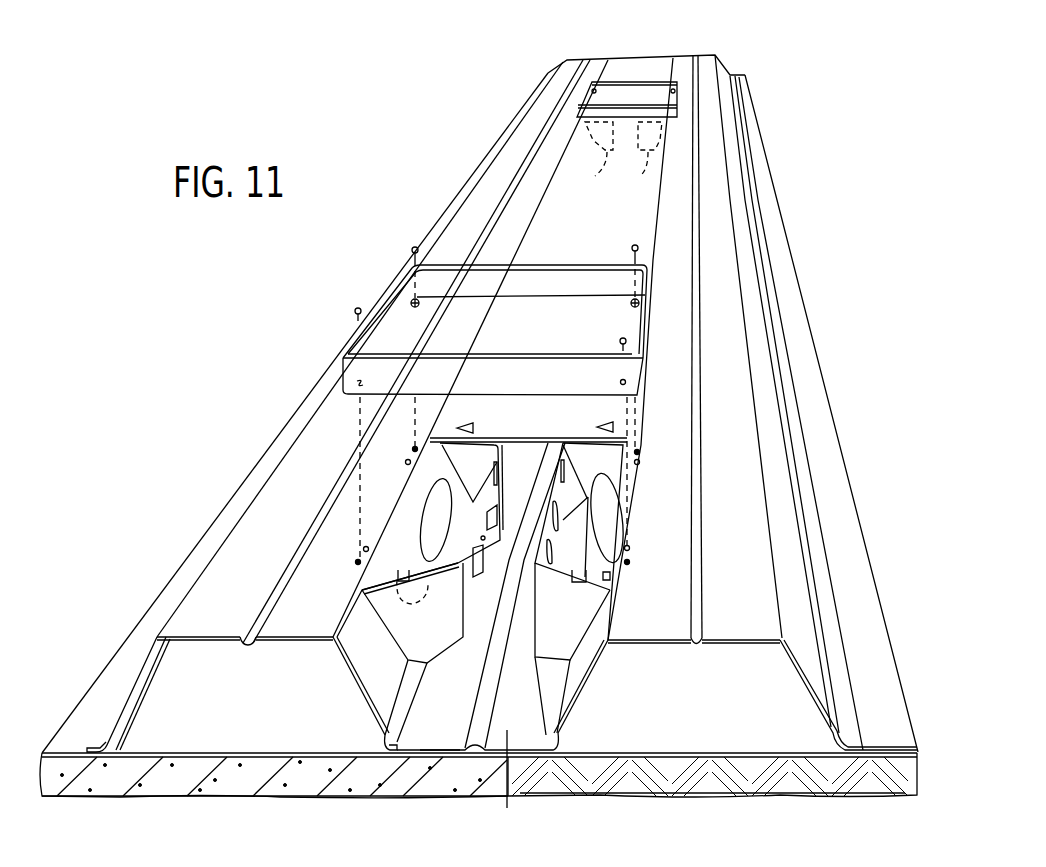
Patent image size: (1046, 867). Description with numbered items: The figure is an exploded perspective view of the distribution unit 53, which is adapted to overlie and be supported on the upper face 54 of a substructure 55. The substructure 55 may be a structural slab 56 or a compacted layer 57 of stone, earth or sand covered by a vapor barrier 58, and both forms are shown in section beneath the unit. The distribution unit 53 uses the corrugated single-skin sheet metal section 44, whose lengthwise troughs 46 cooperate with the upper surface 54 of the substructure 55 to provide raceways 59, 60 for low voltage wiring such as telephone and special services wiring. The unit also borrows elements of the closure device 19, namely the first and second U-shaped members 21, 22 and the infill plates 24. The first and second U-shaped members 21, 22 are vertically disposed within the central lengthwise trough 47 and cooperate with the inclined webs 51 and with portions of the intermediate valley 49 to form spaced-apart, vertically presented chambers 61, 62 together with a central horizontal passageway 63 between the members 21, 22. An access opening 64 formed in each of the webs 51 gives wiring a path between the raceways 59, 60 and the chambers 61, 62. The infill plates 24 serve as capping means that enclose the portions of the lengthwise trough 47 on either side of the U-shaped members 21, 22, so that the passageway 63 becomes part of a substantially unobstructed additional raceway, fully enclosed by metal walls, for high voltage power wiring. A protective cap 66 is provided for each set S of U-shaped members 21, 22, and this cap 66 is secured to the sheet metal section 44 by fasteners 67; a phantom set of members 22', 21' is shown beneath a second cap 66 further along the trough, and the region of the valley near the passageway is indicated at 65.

The closure device 19 is at (668, 40).
The infill plates 24 is at (623, 70).
The corrugated single-skin sheet metal section 44 is at (766, 390).
The distribution unit 53 is at (280, 424).
The lengthwise troughs 46 is at (220, 650).
The upper face 54 is at (96, 715).
The vapor barrier 58 is at (885, 752).
The inclined webs 51 is at (353, 677).
The lengthwise trough 47 is at (420, 698).
The intermediate valley 49 is at (422, 737).
The central horizontal passageway 63 is at (512, 658).
The raceway 59 is at (280, 722).
The structural slab 56 is at (320, 777).
The raceway 60 is at (650, 720).
The compacted layer 57 is at (733, 777).
The substructure 55 is at (128, 806).
The trough bottom 65 is at (448, 715).
The protective cap 66 is at (605, 99).
The fasteners 67 is at (412, 254).
The chamber 62 is at (439, 465).
The second U-shaped member 22 is at (398, 592).
The access opening 64 is at (393, 550).
The first U-shaped member 21 is at (601, 589).
The chamber 61 is at (579, 466).
The set of U-shaped members S is at (660, 133).
The left bracket (phantom) 22' is at (587, 155).
The right bracket (phantom) 21' is at (637, 155).